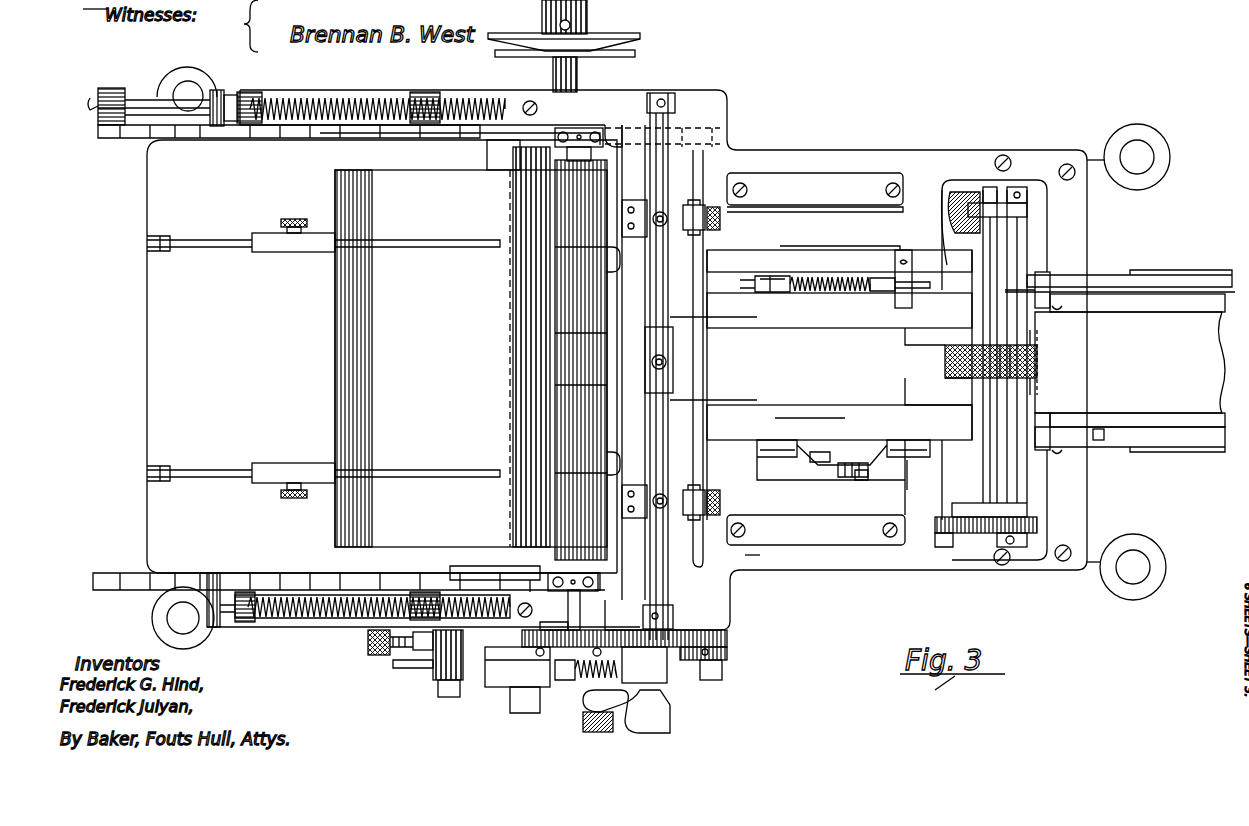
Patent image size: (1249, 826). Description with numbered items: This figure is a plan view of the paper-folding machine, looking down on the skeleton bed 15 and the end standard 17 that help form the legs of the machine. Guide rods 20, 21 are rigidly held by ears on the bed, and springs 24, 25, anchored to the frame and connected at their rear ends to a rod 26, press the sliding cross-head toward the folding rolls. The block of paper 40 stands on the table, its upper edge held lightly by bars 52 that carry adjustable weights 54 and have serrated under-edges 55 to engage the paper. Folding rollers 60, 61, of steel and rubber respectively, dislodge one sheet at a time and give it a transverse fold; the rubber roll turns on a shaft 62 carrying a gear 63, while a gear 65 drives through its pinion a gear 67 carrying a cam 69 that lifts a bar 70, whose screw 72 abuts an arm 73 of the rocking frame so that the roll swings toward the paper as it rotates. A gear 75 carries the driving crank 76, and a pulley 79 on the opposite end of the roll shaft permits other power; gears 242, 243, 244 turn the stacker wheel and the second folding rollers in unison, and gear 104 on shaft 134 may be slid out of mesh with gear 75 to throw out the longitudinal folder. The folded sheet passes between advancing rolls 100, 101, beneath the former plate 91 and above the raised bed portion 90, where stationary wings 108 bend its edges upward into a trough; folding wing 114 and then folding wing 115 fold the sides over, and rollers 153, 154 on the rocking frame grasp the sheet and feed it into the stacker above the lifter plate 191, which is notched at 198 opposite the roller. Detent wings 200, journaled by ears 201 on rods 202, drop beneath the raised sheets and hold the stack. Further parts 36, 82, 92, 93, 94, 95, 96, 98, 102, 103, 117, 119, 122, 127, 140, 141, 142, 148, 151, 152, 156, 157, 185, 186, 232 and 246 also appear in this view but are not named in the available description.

The guide rod 20 is at (162, 98).
The rod 26 is at (222, 97).
The spring 24 is at (357, 99).
The folding roller 60 is at (553, 74).
The pulley 79 is at (612, 55).
The vertical shaft 96 is at (630, 318).
The gear 244 is at (676, 105).
The bracket 246 is at (615, 137).
The gear 243 is at (676, 130).
The gear 242 is at (720, 138).
The serrated under-edge 55 is at (598, 584).
The block of paper 40 is at (382, 356).
The folding roller 61 is at (548, 185).
The weight 54 is at (294, 248).
The knob 36 is at (289, 498).
The bar 52 is at (445, 471).
The tab 82 is at (613, 246).
The guide plate 98 is at (637, 200).
The advancing roll 100 is at (694, 232).
The advancing roll 101 is at (720, 219).
The column 93 is at (693, 457).
The bracket 92 is at (673, 342).
The plate 95 is at (737, 318).
The bracket 94 is at (673, 613).
The stationary wing 108 is at (868, 206).
The folding wing 115 is at (750, 263).
The spring 148 is at (812, 292).
The block 117 is at (867, 291).
The lever 127 is at (908, 300).
The raised bed portion 90 is at (758, 293).
The former plate 91 is at (864, 382).
The folding wing 114 is at (826, 438).
The pawl 119 is at (800, 450).
The block 122 is at (862, 473).
The roller 153 is at (945, 368).
The roller 154 is at (1037, 372).
The notch 198 is at (1037, 348).
The skeleton bed 15 is at (1008, 360).
The end standard 17 is at (1098, 556).
The guide 142 is at (942, 195).
The gear 141 is at (960, 195).
The cross block 140 is at (968, 211).
The rod 151 is at (990, 240).
The rod 152 is at (1012, 256).
The gear 157 is at (975, 533).
The block 156 is at (1030, 547).
The ear 201 is at (1042, 290).
The rod 185 is at (1082, 291).
The rod 202 is at (1120, 284).
The detent wing 200 is at (1160, 298).
The lifter plate 191 is at (1130, 362).
The stud 186 is at (1100, 441).
The guide rod 21 is at (315, 620).
The spring 25 is at (276, 621).
The arm 73 is at (502, 577).
The screw 72 is at (374, 656).
The bar 70 is at (412, 668).
The cam 69 is at (518, 688).
The spring 232 is at (562, 690).
The driving crank 76 is at (615, 728).
The gear 75 is at (665, 652).
The rack 103 is at (728, 640).
The gear 104 is at (735, 663).
The shaft 134 is at (642, 667).
The shaft 62 is at (580, 604).
The gear 63 is at (608, 630).
The gear 65 is at (543, 630).
The gear 67 is at (522, 615).
The frame edge 102 is at (730, 555).